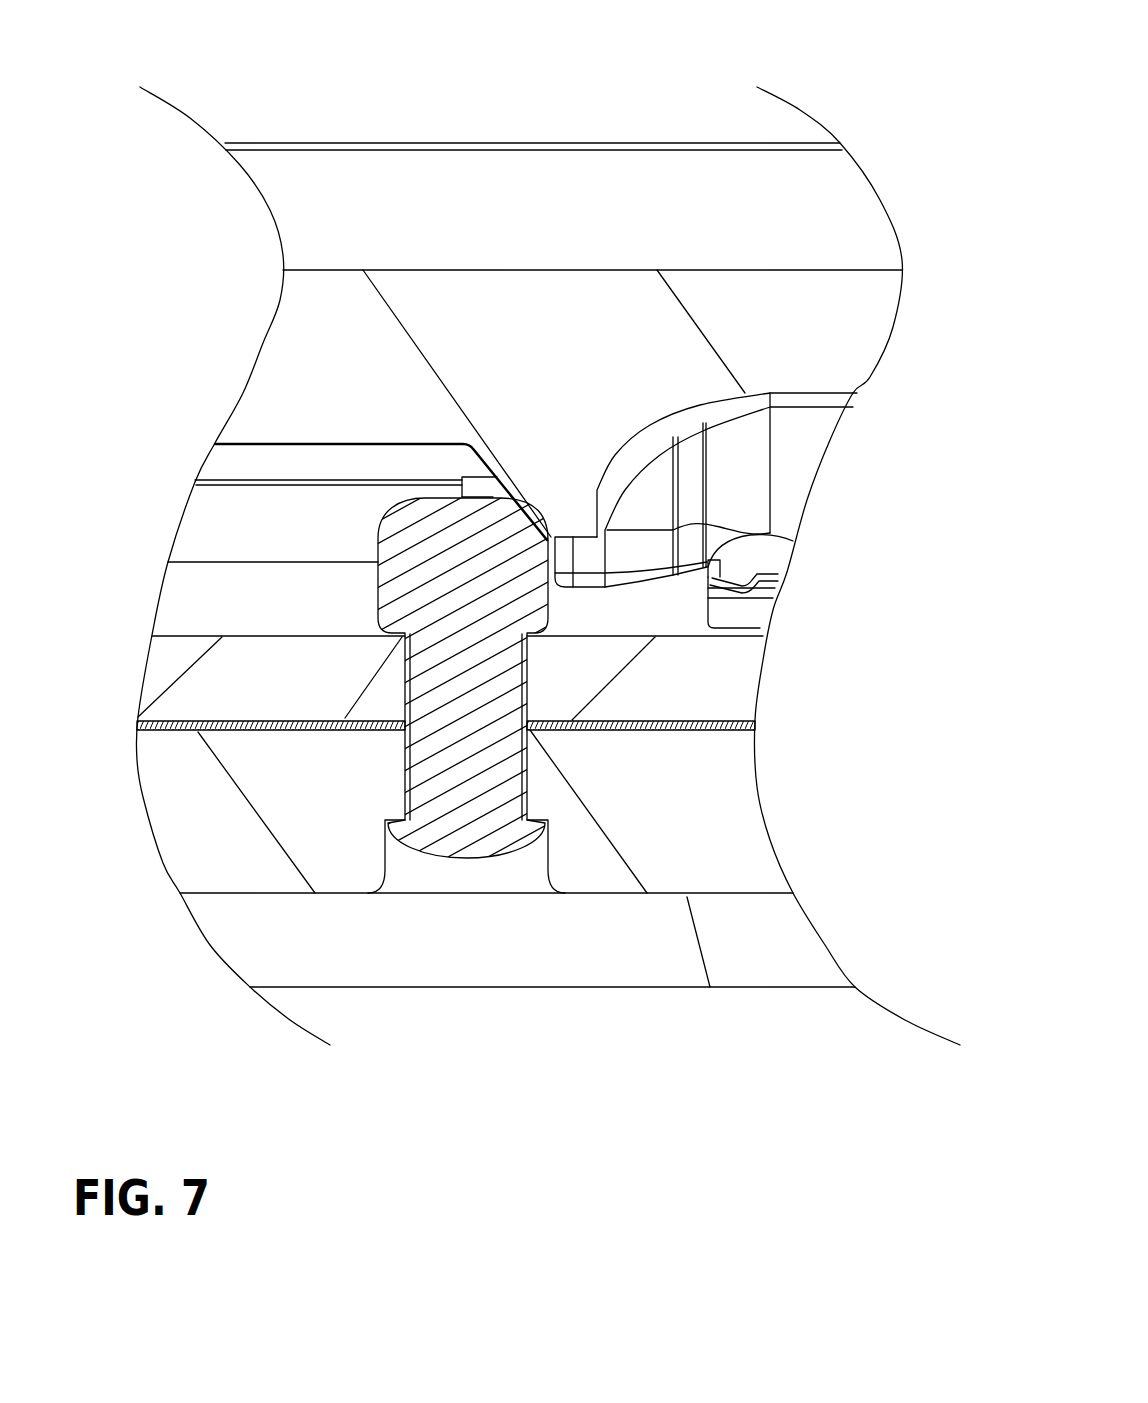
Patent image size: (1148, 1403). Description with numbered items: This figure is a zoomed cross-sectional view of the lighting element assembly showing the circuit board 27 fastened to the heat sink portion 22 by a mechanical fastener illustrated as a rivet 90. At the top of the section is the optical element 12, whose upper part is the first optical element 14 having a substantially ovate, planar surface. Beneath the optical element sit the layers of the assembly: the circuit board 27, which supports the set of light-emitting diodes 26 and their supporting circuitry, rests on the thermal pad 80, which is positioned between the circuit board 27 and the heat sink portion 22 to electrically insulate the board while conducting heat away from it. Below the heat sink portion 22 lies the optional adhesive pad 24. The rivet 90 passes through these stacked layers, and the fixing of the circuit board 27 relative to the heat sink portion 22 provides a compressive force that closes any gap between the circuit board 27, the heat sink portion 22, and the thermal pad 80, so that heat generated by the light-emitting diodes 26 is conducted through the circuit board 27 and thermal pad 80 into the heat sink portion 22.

The optical element 12 is at (578, 107).
The first optical element 14 is at (608, 317).
The heat sink portion 22 is at (222, 848).
The adhesive pad 24 is at (418, 963).
The light-emitting diodes 26 is at (753, 613).
The circuit board 27 is at (227, 692).
The thermal pad 80 is at (665, 720).
The rivet 90 is at (403, 520).